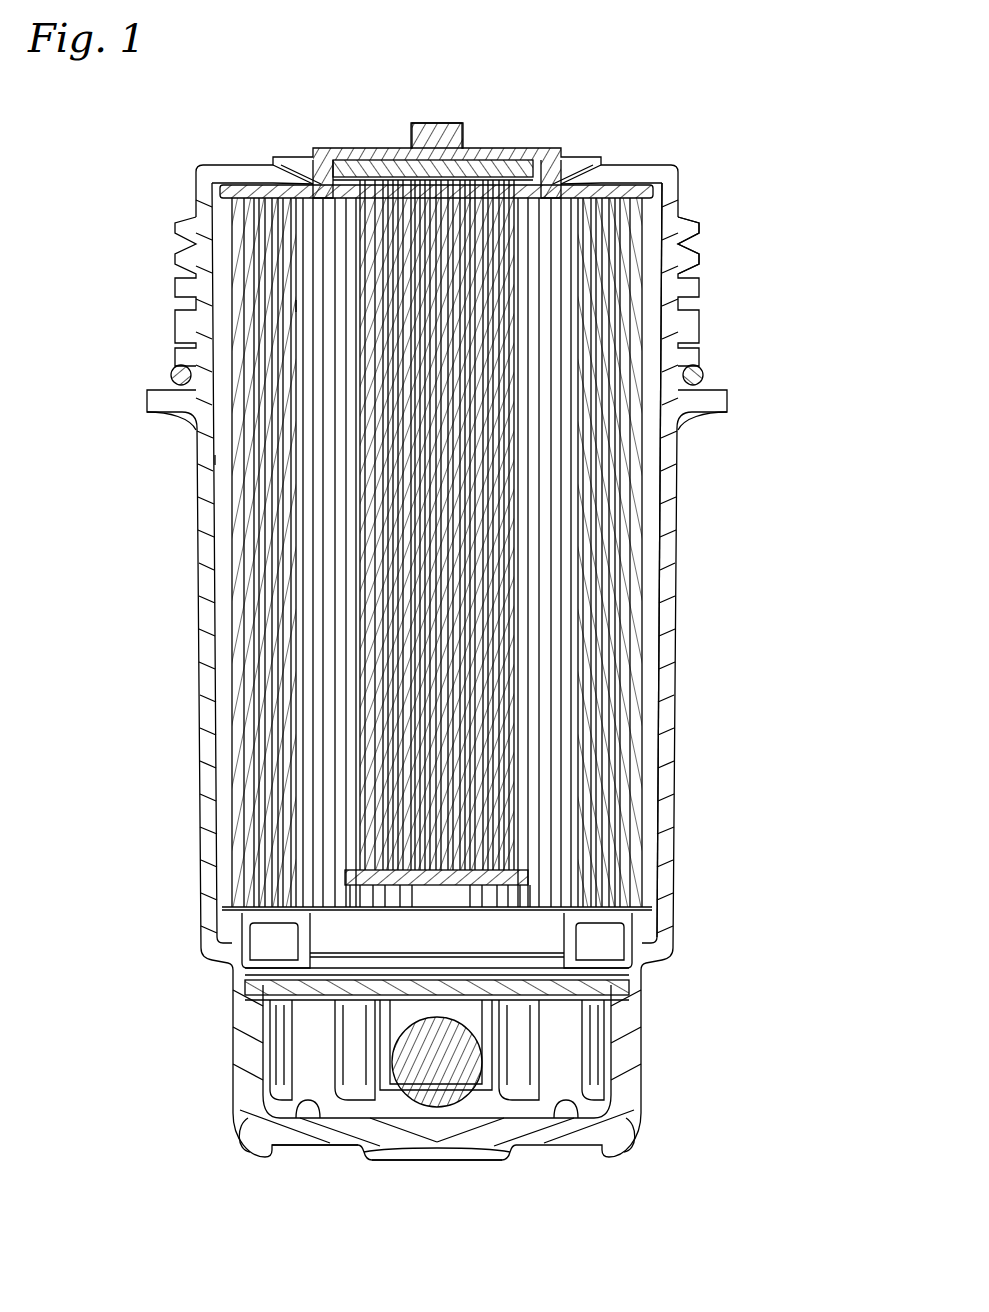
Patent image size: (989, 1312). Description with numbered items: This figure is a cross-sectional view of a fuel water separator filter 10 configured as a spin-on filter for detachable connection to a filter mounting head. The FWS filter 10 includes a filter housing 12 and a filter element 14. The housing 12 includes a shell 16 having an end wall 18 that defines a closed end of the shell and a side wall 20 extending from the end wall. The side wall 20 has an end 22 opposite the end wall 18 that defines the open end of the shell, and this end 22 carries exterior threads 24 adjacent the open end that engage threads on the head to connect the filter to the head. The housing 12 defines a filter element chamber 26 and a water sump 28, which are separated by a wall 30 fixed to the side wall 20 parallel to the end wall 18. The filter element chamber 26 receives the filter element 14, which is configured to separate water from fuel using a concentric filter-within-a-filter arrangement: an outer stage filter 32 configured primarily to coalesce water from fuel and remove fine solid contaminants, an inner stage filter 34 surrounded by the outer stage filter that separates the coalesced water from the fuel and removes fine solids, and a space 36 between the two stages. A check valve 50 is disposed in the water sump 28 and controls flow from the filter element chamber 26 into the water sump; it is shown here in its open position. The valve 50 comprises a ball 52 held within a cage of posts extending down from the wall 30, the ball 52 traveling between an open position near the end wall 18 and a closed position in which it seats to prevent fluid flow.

The FWS filter 10 is at (758, 348).
The filter housing 12 is at (678, 617).
The filter element 14 is at (231, 683).
The shell 16 is at (197, 556).
The end wall 18 is at (563, 1150).
The side wall 20 is at (676, 516).
The end of the side wall 22 is at (670, 168).
The exterior threads 24 is at (701, 234).
The filter element chamber 26 is at (223, 462).
The water sump 28 is at (563, 1047).
The wall 30 is at (303, 1012).
The outer stage filter 32 is at (639, 340).
The inner stage filter 34 is at (360, 638).
The space 36 is at (330, 718).
The check valve 50 is at (396, 1112).
The ball 52 is at (454, 1100).